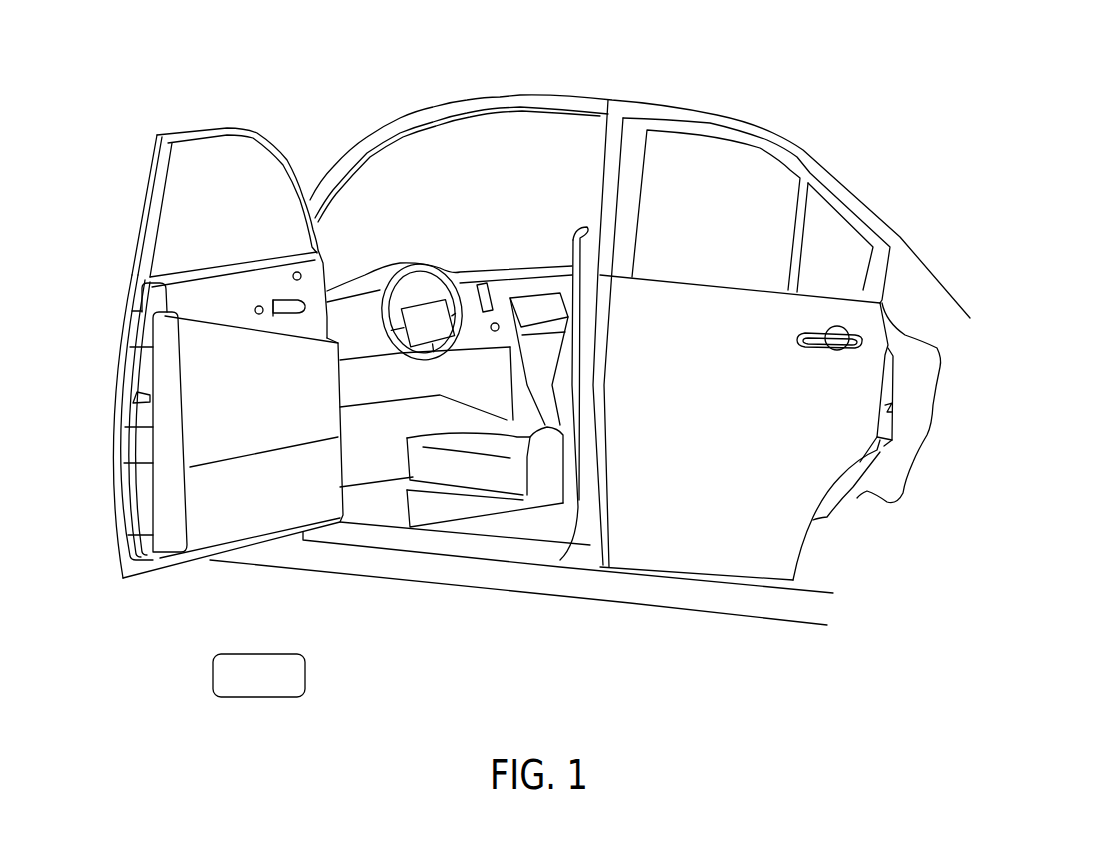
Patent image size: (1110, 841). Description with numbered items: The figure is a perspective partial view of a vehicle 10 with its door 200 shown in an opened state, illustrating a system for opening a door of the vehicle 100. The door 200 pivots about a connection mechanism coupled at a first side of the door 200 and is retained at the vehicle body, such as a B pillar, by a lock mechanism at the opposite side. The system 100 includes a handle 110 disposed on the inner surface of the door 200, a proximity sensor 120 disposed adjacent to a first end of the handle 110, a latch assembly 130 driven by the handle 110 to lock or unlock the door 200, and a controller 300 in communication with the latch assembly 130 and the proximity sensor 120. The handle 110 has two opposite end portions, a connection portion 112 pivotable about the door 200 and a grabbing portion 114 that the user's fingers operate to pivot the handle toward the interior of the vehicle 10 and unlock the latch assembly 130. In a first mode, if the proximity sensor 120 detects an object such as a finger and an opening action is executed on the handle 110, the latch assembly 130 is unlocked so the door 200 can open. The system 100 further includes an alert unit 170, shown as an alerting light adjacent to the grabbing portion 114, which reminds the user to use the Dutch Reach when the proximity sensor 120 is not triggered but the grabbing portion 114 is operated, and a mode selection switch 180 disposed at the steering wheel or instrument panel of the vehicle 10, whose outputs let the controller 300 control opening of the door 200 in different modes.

The vehicle 10 is at (537, 45).
The system for opening a door of the vehicle 100 is at (133, 42).
The handle 110 is at (280, 295).
The connection portion 112 is at (274, 316).
The grabbing portion 114 is at (300, 313).
The proximity sensor 120 is at (256, 307).
The latch assembly 130 is at (130, 400).
The alert unit 170 is at (295, 272).
The mode selection switch 180 is at (494, 332).
The door 200 is at (145, 192).
The controller 300 is at (259, 316).